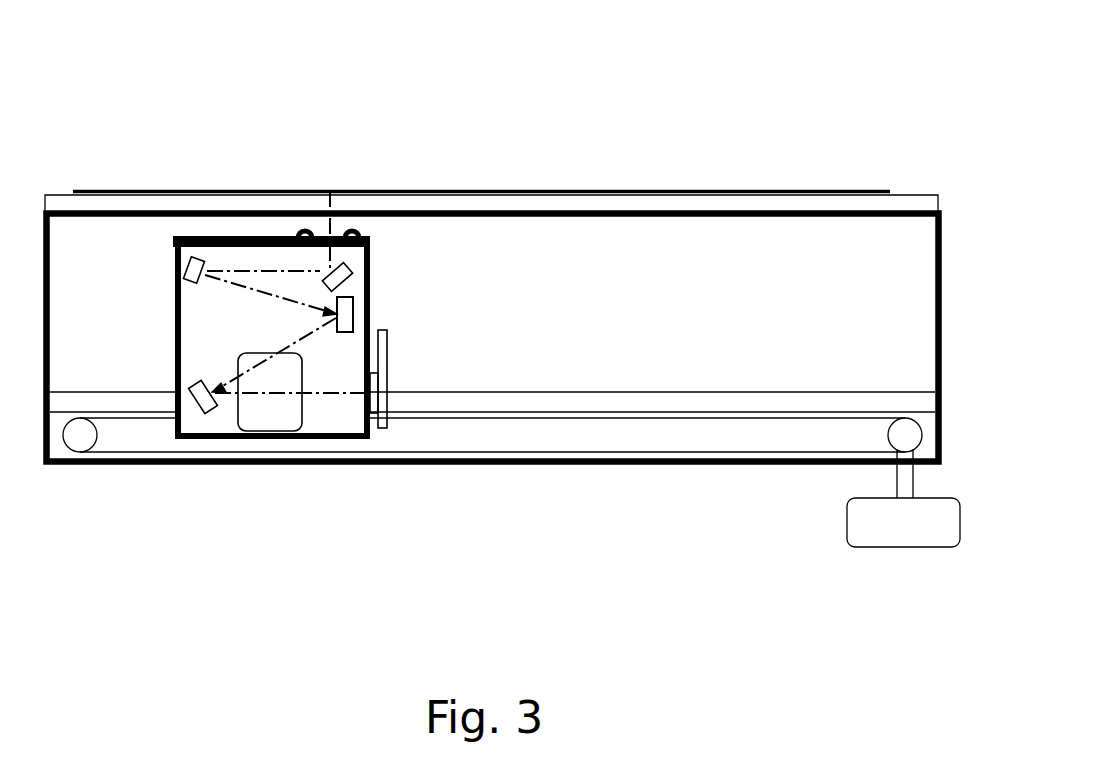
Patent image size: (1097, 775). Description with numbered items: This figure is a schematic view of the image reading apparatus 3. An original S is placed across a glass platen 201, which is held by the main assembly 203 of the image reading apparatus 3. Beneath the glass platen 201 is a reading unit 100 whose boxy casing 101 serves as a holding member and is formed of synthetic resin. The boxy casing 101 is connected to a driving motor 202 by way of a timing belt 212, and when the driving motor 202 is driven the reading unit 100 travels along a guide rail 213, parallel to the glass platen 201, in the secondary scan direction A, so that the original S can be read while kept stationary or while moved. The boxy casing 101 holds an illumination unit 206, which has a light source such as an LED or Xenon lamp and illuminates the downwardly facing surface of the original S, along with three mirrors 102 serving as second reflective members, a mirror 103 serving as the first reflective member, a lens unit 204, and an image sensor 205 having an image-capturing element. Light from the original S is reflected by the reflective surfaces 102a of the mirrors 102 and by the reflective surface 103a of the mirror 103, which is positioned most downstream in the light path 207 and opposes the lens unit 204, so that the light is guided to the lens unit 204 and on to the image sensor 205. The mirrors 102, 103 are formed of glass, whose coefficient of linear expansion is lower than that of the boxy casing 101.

The image reading apparatus 3 is at (788, 100).
The reading unit 100 is at (163, 431).
The boxy casing 101 is at (190, 440).
The mirror 102 is at (195, 258).
The reflective surface 102a is at (337, 298).
The mirror 103 is at (211, 413).
The reflective surface 103a is at (208, 388).
The glass platen 201 is at (562, 203).
The driving motor 202 is at (917, 525).
The main assembly 203 is at (498, 465).
The lens unit 204 is at (305, 413).
The image sensor 205 is at (368, 413).
The illumination unit 206 is at (260, 236).
The light path 207 is at (237, 378).
The timing belt 212 is at (713, 452).
The guide rail 213 is at (660, 400).
The original S is at (452, 190).
The secondary scan direction A is at (486, 618).